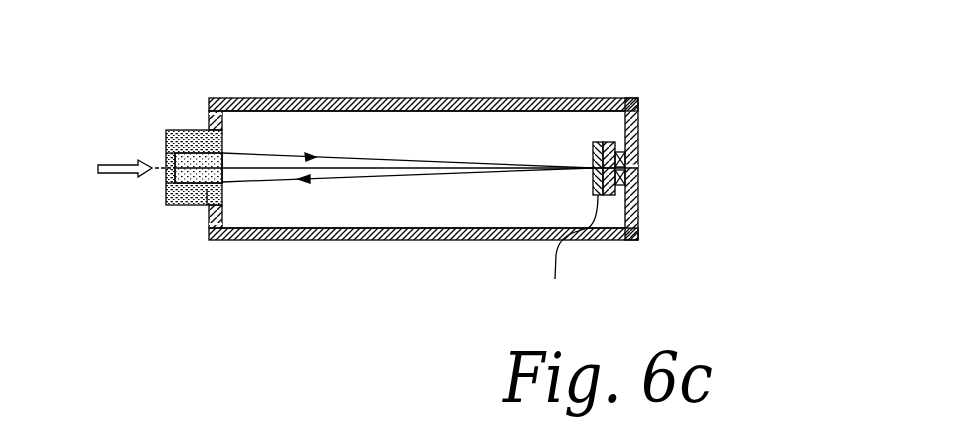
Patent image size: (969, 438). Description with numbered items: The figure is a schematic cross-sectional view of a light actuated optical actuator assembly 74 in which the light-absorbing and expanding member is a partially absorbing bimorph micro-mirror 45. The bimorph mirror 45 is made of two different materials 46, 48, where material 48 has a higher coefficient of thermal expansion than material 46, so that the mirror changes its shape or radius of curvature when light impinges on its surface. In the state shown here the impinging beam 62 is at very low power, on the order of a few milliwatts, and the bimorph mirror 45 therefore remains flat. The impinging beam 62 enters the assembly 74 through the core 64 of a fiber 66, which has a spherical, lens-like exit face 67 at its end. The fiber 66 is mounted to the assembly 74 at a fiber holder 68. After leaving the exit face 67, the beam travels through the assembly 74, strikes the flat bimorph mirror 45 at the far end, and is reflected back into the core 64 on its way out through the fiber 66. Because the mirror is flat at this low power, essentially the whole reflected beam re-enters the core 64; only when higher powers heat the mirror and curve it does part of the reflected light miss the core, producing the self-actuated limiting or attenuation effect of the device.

The bimorph micro-mirror 45 is at (566, 206).
The material 46 is at (610, 142).
The material 48 is at (569, 249).
The impinging beam 62 is at (110, 173).
The core 64 is at (166, 200).
The fiber 66 is at (207, 190).
The spherical, lens-like exit face 67 is at (222, 183).
The fiber holder 68 is at (212, 126).
The assembly 74 is at (676, 193).